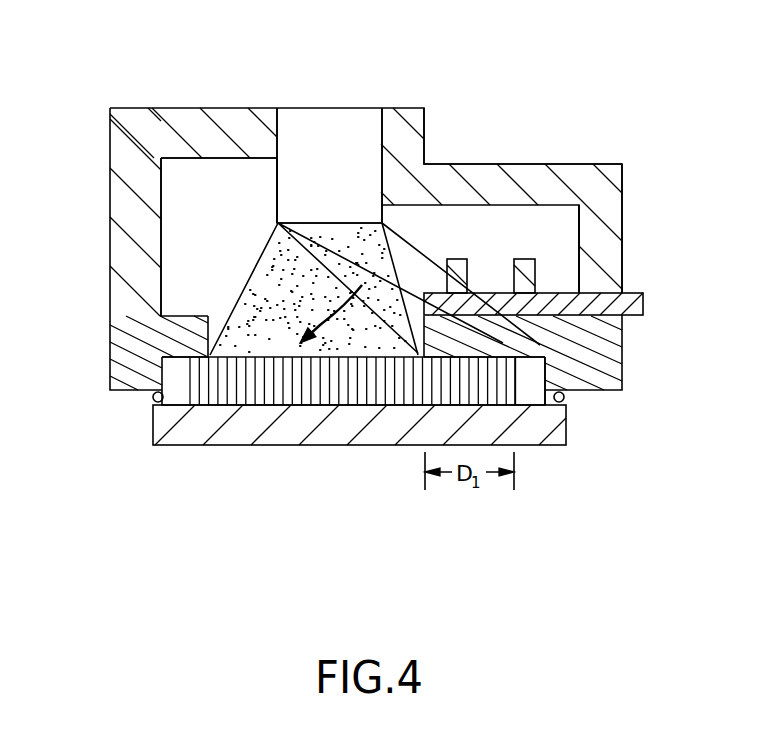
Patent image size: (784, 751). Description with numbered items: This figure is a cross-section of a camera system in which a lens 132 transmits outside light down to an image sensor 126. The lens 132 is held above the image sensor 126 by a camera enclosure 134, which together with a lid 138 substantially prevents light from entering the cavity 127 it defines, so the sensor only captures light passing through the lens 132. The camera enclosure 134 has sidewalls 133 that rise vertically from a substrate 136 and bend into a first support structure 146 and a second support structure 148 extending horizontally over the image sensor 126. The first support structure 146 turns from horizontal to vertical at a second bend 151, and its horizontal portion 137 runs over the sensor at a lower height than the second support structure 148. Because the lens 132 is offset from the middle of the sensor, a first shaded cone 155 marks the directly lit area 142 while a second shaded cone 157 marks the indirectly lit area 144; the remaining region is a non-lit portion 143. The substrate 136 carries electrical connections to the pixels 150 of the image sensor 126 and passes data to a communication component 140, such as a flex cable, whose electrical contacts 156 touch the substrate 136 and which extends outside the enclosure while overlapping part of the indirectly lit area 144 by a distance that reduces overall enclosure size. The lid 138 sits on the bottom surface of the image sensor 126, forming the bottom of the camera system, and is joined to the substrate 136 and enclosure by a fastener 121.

The seal/o-ring 121 is at (153, 400).
The image sensor 126 is at (320, 385).
The cavity 127 is at (179, 170).
The lens 132 is at (343, 130).
The sidewalls 133 is at (610, 215).
The camera enclosure 134 is at (130, 245).
The substrate 136 is at (128, 360).
The horizontal portion 137 is at (582, 178).
The lid 138 is at (285, 432).
The communication component 140 is at (636, 305).
The directly lit area 142 is at (341, 301).
The non-lit portion 143 is at (510, 368).
The indirectly lit area 144 is at (480, 353).
The first support structure 146 is at (407, 140).
The second support structure 148 is at (227, 120).
The pixels 150 is at (242, 357).
The second bend 151 is at (448, 152).
The first shaded cone 155 is at (280, 273).
The electrical contacts 156 is at (535, 268).
The second shaded cone 157 is at (400, 258).